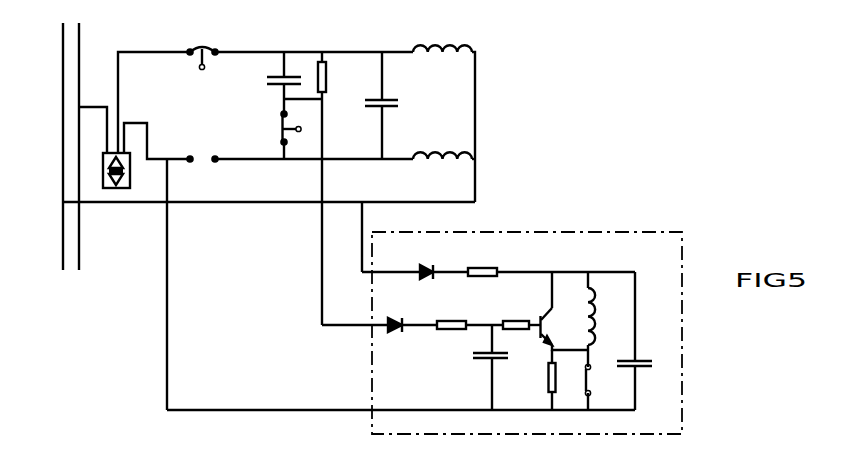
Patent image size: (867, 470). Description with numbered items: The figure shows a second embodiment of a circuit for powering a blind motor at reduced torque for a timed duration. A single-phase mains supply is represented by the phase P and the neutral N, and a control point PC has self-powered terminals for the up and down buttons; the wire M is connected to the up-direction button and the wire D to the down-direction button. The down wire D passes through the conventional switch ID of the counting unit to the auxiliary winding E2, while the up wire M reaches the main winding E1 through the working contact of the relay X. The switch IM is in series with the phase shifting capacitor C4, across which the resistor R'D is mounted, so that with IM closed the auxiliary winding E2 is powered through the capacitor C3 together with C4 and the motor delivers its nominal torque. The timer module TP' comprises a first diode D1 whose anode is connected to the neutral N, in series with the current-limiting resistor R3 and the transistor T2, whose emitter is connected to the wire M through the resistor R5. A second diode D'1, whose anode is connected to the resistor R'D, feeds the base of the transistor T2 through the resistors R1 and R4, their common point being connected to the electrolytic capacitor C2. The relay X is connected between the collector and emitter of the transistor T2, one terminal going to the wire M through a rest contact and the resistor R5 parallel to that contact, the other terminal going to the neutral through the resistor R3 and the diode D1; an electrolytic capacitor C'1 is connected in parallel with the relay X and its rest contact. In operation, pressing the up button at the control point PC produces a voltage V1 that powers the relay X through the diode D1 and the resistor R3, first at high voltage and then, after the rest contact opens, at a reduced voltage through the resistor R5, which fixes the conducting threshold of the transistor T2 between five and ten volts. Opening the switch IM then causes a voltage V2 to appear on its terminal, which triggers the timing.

The control point PC is at (103, 165).
The neutral N is at (55, 163).
The phase P is at (93, 163).
The down-direction wire D is at (154, 102).
The up-direction wire M is at (157, 141).
The switch ID is at (202, 45).
The phase shifting capacitor C4 is at (269, 83).
The switch IM is at (276, 135).
The resistor R'D is at (342, 188).
The capacitor C3 is at (397, 105).
The auxiliary winding E2 is at (442, 36).
The main winding E1 is at (442, 143).
The voltage V1 is at (379, 285).
The voltage V2 is at (355, 341).
The first diode D1 is at (444, 260).
The current-limiting resistor R3 is at (551, 258).
The second diode D'1 is at (412, 313).
The resistor R1 is at (470, 311).
The resistor R4 is at (521, 311).
The electrolytic capacitor C2 is at (475, 367).
The transistor T2 is at (565, 317).
The resistor R5 is at (536, 386).
The relay X is at (602, 319).
The electrolytic capacitor C'1 is at (646, 341).
The timer module TP' is at (527, 304).